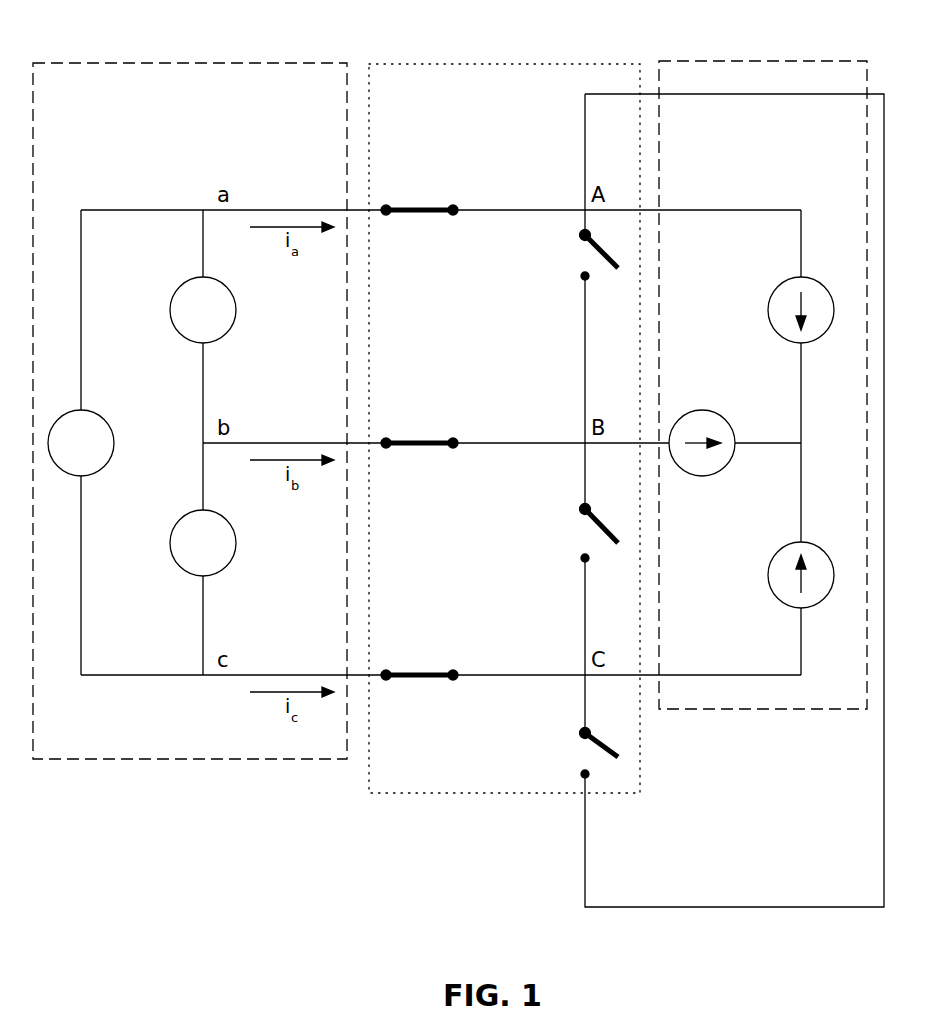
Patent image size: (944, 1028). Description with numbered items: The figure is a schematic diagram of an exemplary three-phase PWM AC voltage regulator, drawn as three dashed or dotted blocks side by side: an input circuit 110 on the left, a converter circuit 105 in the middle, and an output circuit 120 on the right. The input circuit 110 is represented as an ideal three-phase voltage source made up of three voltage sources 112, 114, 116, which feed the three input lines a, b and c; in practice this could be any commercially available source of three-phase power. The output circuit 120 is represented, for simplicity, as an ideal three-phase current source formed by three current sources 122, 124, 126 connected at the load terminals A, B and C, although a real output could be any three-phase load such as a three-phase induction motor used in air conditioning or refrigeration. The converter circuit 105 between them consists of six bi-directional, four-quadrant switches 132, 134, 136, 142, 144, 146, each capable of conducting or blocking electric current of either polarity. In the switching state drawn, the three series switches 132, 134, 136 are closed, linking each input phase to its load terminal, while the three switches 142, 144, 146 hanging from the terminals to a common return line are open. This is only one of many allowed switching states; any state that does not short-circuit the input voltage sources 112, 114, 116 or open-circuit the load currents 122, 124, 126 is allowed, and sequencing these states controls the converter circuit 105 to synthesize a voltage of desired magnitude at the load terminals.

The converter circuit 105 is at (612, 55).
The input circuit 110 is at (328, 53).
The voltage source 112 is at (236, 315).
The voltage source 114 is at (236, 548).
The voltage source 116 is at (114, 445).
The output circuit 120 is at (836, 50).
The current source 122 is at (768, 312).
The current source 124 is at (702, 410).
The current source 126 is at (768, 577).
The switch s1 132 is at (420, 215).
The switch s2 134 is at (420, 448).
The switch s3 136 is at (420, 680).
The switch s4 142 is at (620, 270).
The switch s5 144 is at (602, 519).
The switch s6 146 is at (602, 744).